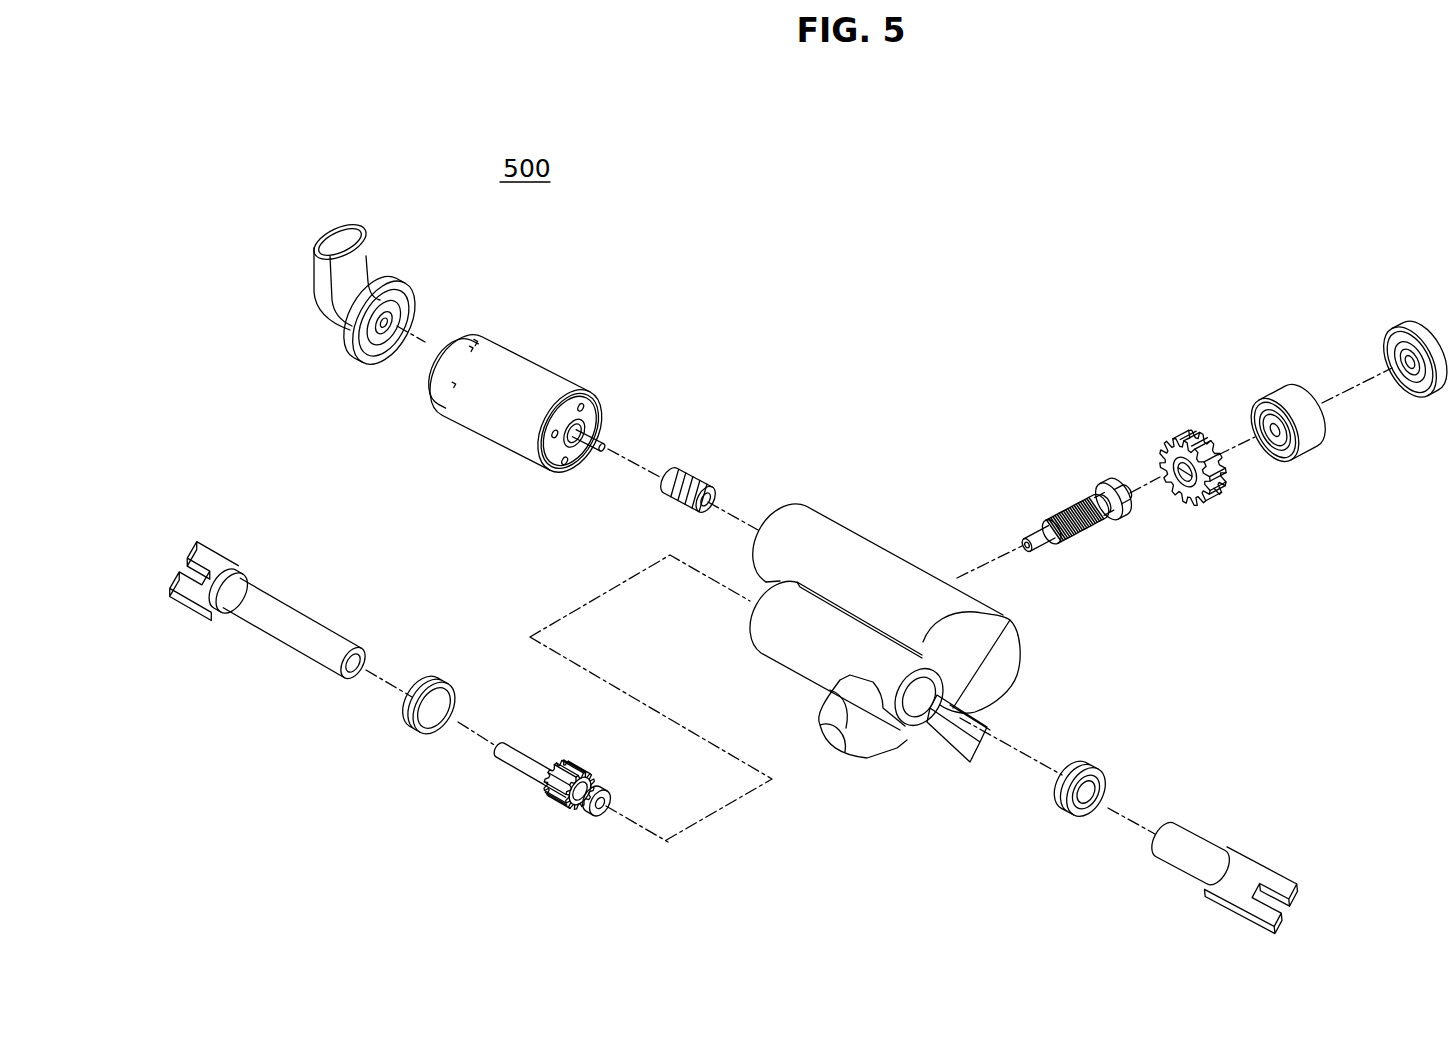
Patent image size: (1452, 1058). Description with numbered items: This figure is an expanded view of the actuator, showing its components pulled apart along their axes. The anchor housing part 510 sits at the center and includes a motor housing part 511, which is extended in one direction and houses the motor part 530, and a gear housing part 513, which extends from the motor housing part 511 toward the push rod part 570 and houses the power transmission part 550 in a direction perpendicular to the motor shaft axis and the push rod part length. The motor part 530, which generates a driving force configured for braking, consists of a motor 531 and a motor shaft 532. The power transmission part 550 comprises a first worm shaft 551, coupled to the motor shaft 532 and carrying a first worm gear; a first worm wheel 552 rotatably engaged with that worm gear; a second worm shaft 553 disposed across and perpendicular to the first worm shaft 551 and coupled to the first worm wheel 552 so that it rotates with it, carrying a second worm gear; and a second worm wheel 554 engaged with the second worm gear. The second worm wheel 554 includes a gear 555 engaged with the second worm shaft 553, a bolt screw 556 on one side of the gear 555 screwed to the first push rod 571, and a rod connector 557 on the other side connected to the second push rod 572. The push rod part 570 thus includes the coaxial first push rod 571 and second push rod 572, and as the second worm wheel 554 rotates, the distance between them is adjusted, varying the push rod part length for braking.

The anchor housing part 510 is at (899, 438).
The motor housing part 511 is at (838, 548).
The gear housing part 513 is at (1015, 652).
The motor part 530 is at (580, 282).
The motor 531 is at (533, 370).
The motor shaft 532 is at (612, 440).
The power transmission part 550 is at (758, 358).
The first worm shaft 551 is at (700, 470).
The first worm wheel 552 is at (1185, 440).
The second worm shaft 553 is at (1068, 510).
The second worm wheel 554 is at (522, 912).
The gear 555 is at (545, 800).
The bolt screw 556 is at (505, 763).
The rod connector 557 is at (585, 810).
The push rod part 570 is at (172, 724).
The first push rod 571 is at (215, 612).
The second push rod 572 is at (1262, 880).